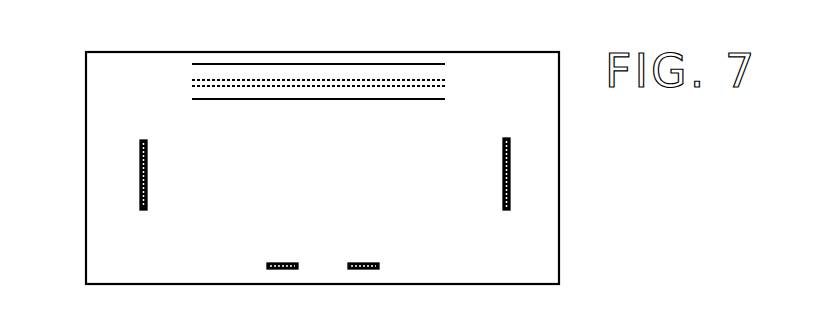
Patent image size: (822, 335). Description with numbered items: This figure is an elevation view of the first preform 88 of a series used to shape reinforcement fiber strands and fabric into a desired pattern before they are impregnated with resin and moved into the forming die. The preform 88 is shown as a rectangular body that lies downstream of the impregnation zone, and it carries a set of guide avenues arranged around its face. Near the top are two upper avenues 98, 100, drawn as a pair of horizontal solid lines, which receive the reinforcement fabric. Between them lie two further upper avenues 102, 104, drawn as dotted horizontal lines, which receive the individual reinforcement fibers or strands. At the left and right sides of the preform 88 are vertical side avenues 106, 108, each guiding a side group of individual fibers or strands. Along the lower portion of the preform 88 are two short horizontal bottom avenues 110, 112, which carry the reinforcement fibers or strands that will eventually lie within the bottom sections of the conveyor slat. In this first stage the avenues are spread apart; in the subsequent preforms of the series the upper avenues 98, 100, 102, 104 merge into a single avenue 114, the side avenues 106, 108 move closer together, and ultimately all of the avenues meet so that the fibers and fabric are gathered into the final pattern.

The preform 88 is at (112, 246).
The upper avenue 98 is at (257, 64).
The upper avenue 100 is at (340, 100).
The upper avenue 102 is at (318, 80).
The upper avenue 104 is at (408, 87).
The side avenue 106 is at (135, 183).
The side avenue 108 is at (515, 181).
The bottom avenue 110 is at (282, 270).
The bottom avenue 112 is at (364, 270).
The single avenue 114 is at (446, 327).